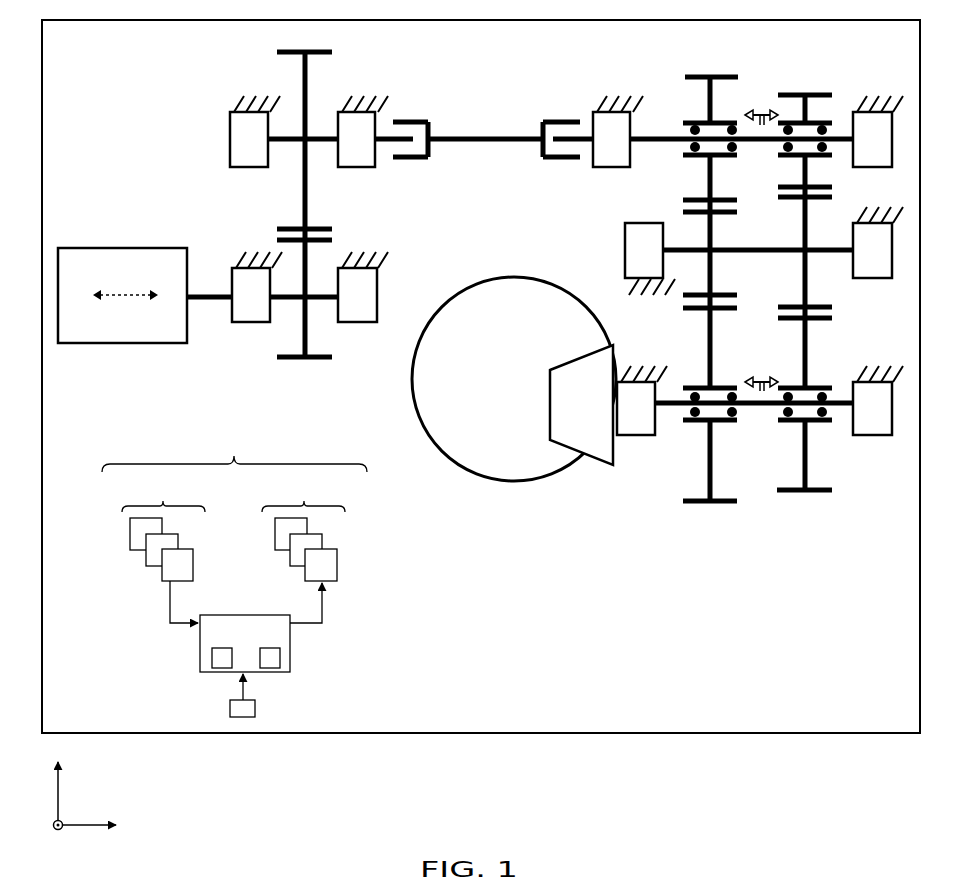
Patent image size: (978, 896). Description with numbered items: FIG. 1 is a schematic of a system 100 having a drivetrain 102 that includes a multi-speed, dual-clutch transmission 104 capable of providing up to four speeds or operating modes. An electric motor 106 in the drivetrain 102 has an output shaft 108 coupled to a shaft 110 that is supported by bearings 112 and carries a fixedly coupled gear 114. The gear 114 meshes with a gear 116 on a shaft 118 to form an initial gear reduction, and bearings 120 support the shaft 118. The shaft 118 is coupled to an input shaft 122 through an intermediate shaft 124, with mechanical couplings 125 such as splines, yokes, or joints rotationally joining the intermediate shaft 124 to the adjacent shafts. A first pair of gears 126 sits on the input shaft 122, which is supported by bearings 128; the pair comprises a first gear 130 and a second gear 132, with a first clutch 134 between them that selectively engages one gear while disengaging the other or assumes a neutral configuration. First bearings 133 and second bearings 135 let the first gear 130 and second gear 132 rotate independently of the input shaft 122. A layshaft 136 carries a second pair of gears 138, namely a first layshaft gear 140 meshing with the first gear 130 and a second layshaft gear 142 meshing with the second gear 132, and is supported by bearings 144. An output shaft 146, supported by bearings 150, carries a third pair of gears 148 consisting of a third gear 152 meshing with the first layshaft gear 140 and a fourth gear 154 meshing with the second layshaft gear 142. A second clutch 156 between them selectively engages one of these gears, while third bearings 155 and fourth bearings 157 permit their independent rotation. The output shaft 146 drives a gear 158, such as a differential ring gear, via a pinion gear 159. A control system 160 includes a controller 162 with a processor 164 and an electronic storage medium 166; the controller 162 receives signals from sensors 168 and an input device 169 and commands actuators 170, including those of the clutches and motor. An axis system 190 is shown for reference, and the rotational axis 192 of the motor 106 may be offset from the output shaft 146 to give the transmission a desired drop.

The system 100 is at (62, 20).
The drivetrain 102 is at (90, 68).
The transmission 104 is at (156, 98).
The electric motor 106 is at (62, 248).
The output shaft 108 is at (207, 300).
The shaft 110 is at (328, 300).
The bearings 112 is at (250, 323).
The gear 114 is at (320, 360).
The gear 116 is at (326, 51).
The shaft 118 is at (285, 143).
The bearings 120 is at (230, 163).
The input shaft 122 is at (662, 143).
The intermediate shaft 124 is at (500, 143).
The mechanical couplings 125 is at (418, 160).
The first pair of gears 126 is at (661, 66).
The bearings 128 is at (614, 168).
The first gear 130 is at (693, 77).
The second gear 132 is at (787, 95).
The first bearings 133 is at (688, 130).
The first clutch 134 is at (762, 104).
The second bearings 135 is at (834, 128).
The layshaft 136 is at (760, 253).
The second pair of gears 138 is at (668, 302).
The first layshaft gear 140 is at (713, 222).
The second layshaft gear 142 is at (808, 290).
The bearings 144 is at (625, 250).
The output shaft 146 is at (768, 406).
The third pair of gears 148 is at (658, 514).
The bearings 150 is at (637, 436).
The third gear 152 is at (703, 504).
The fourth gear 154 is at (826, 493).
The third bearings 155 is at (681, 419).
The second clutch 156 is at (761, 369).
The fourth bearings 157 is at (836, 392).
The gear 158 is at (518, 483).
The gear 159 is at (602, 462).
The control system 160 is at (234, 451).
The controller 162 is at (227, 644).
The processor 164 is at (212, 658).
The electronic storage medium 166 is at (280, 658).
The sensors 168 is at (163, 549).
The input device 169 is at (255, 708).
The actuators 170 is at (303, 548).
The axis system 190 is at (85, 803).
The rotational axis 192 is at (127, 299).